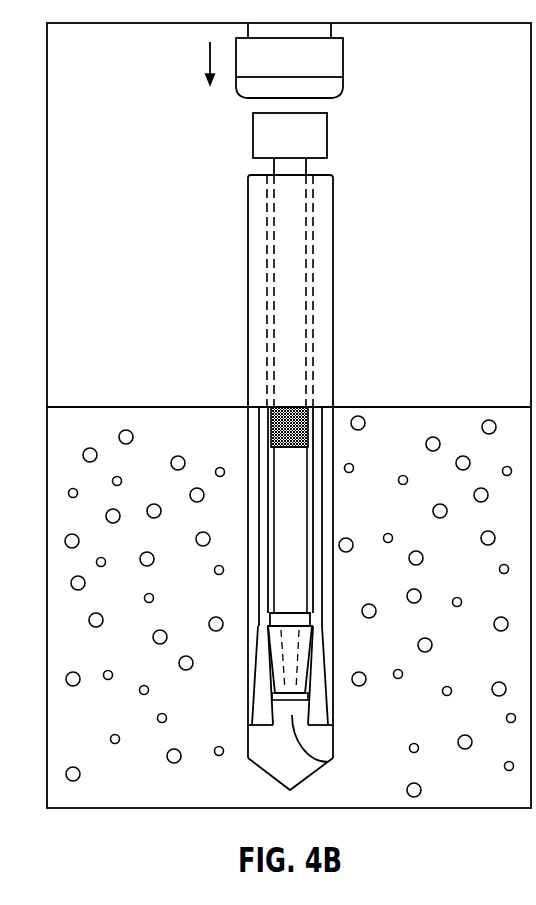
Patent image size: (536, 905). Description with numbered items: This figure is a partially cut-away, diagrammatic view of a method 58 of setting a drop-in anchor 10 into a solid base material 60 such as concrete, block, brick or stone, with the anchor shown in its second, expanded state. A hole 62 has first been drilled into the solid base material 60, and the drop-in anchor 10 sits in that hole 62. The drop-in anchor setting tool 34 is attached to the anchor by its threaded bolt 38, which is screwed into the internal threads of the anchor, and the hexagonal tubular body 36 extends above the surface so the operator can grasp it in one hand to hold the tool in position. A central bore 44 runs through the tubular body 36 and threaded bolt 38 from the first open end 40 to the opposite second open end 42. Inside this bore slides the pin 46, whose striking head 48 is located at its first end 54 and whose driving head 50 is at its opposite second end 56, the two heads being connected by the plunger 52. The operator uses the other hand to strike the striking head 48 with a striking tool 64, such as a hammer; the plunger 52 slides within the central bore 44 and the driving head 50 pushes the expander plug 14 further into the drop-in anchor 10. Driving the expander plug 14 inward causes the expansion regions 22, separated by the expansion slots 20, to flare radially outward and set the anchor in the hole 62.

The drop-in anchor 10 is at (285, 604).
The expander plug 14 is at (287, 658).
The expansion slots 20 is at (327, 761).
The expansion regions 22 is at (258, 708).
The drop-in anchor setting tool 34 is at (283, 285).
The tubular body 36 is at (333, 263).
The threaded bolt 38 is at (312, 423).
The first open end 40 is at (310, 168).
The second open end 42 is at (308, 452).
The central bore 44 is at (313, 210).
The pin 46 is at (297, 543).
The striking head 48 is at (318, 125).
The driving head 50 is at (305, 620).
The plunger 52 is at (280, 470).
The first end 54 is at (277, 132).
The second end 56 is at (268, 620).
The method 58 is at (147, 73).
The solid base material 60 is at (467, 565).
The hole 62 is at (270, 757).
The striking tool 64 is at (305, 72).